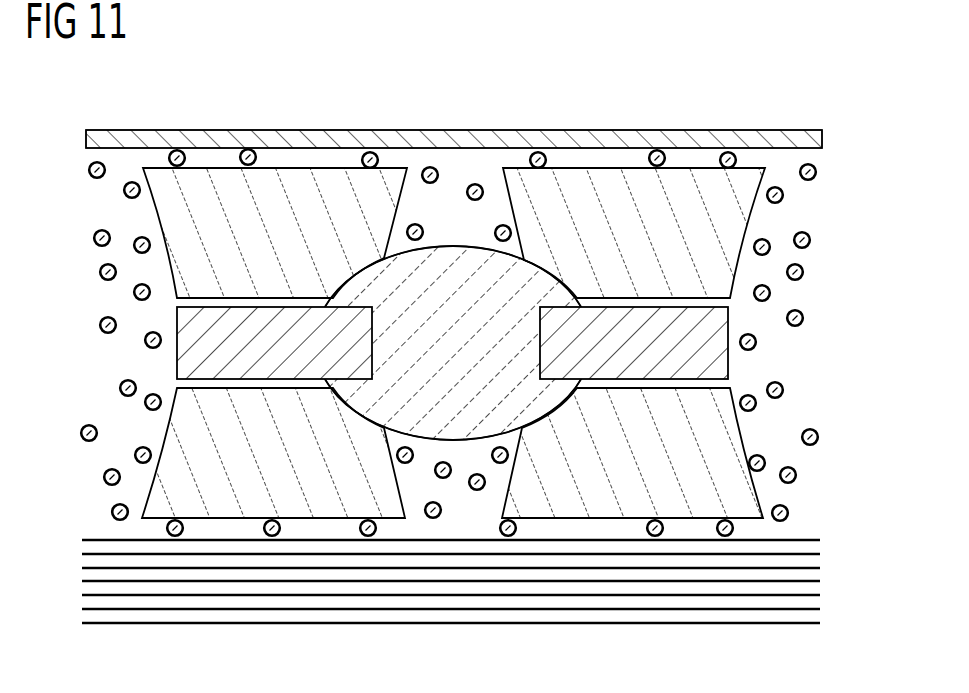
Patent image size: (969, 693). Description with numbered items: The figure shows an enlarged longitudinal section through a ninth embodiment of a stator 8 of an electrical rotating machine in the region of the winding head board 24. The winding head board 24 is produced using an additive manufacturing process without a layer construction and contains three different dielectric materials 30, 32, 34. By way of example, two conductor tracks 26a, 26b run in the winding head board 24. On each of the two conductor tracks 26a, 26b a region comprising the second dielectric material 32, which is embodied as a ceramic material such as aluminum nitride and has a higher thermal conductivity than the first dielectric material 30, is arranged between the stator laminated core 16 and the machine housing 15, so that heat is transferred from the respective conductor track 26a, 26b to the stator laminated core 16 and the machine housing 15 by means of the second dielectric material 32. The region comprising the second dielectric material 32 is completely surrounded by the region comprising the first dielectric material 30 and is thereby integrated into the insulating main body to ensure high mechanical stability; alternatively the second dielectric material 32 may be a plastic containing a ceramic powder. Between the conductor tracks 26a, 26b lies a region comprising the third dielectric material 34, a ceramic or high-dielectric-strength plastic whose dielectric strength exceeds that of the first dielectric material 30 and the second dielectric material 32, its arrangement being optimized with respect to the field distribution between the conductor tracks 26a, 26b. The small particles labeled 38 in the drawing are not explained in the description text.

The stator 8 is at (814, 69).
The machine housing 15 is at (450, 130).
The stator laminated core 16 is at (780, 622).
The winding head board 24 is at (774, 184).
The conductor track 26a is at (177, 314).
The conductor track 26b is at (728, 363).
The first dielectric material 30 is at (107, 215).
The second dielectric material 32 is at (283, 168).
The third dielectric material 34 is at (468, 272).
The particles 38 is at (371, 151).